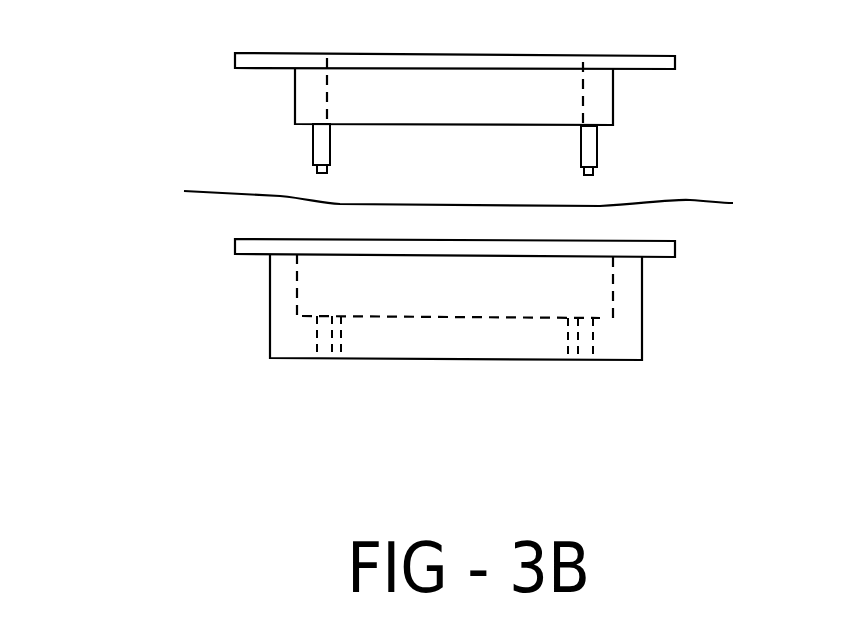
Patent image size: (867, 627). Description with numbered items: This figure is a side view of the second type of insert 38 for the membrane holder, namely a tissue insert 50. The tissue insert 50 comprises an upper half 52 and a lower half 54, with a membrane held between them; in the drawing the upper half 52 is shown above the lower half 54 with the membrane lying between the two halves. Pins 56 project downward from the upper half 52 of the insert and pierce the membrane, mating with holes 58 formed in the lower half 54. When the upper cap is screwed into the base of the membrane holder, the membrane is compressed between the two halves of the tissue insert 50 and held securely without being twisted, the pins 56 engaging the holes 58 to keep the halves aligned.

The insert 38 is at (165, 197).
The tissue insert 50 is at (498, 299).
The upper half 52 is at (662, 62).
The lower half 54 is at (285, 338).
The pins 56 is at (323, 148).
The holes 58 is at (327, 312).